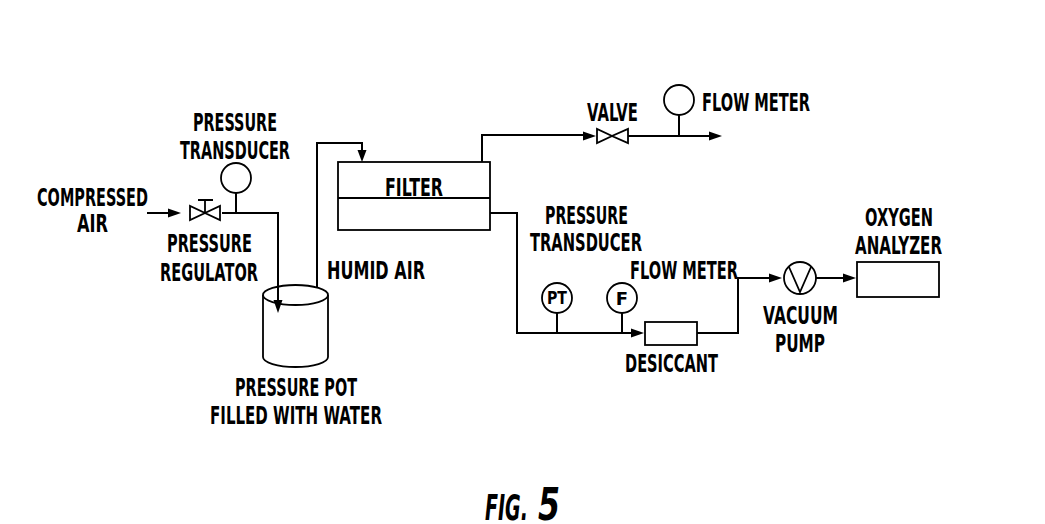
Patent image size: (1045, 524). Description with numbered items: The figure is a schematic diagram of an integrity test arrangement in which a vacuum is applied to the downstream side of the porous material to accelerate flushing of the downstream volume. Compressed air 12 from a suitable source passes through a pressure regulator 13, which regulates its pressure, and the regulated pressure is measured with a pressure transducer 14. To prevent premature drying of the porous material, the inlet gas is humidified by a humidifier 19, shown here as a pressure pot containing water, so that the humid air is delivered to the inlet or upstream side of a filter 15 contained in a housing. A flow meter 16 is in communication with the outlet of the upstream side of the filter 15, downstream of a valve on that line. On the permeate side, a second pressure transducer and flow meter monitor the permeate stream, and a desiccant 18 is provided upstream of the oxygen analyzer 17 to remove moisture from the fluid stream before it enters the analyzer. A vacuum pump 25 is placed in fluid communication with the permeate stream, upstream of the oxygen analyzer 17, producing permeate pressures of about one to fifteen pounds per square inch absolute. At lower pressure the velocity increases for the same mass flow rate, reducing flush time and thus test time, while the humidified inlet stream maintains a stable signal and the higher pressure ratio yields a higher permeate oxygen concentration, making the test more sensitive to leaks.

The compressed air 12 is at (147, 214).
The pressure regulator 13 is at (187, 212).
The pressure transducer 14 is at (251, 178).
The filter 15 is at (455, 223).
The flow meter 16 is at (679, 85).
The oxygen analyzer 17 is at (887, 297).
The desiccant 18 is at (663, 322).
The humidifier 19 is at (263, 321).
The vacuum pump 25 is at (798, 262).